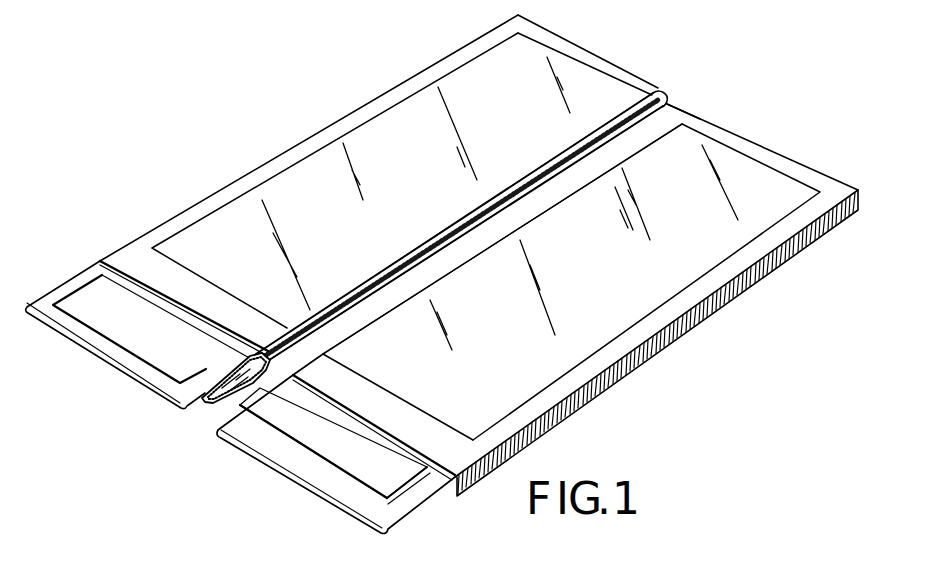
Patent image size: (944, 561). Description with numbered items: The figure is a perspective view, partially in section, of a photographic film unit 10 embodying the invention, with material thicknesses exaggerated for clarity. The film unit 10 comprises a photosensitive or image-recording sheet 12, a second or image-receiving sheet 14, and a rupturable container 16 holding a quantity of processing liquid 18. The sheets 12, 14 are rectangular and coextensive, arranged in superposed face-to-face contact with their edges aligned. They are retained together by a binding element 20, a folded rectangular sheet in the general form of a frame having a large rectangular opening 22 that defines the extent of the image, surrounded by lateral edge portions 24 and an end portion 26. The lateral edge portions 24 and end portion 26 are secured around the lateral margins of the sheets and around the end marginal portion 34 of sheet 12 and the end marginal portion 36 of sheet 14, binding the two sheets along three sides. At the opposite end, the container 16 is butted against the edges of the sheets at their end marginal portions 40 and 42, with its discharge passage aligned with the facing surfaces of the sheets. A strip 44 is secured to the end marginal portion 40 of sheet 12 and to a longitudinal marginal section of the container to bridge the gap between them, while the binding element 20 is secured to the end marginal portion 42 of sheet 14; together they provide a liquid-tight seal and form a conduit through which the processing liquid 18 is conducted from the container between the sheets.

The photographic film unit 10 is at (272, 148).
The photosensitive sheet 12 is at (378, 288).
The image-receiving sheet 14 is at (397, 241).
The rupturable container 16 is at (150, 373).
The processing liquid 18 is at (209, 393).
The binding element 20 is at (652, 350).
The rectangular opening 22 is at (422, 90).
The lateral edge portions 24 is at (200, 205).
The end portion 26 is at (579, 55).
The end marginal portion 34 is at (668, 105).
The end marginal portion 36 is at (664, 93).
The end marginal portion 40 is at (472, 235).
The end marginal portion 42 is at (298, 327).
The strip 44 is at (283, 354).